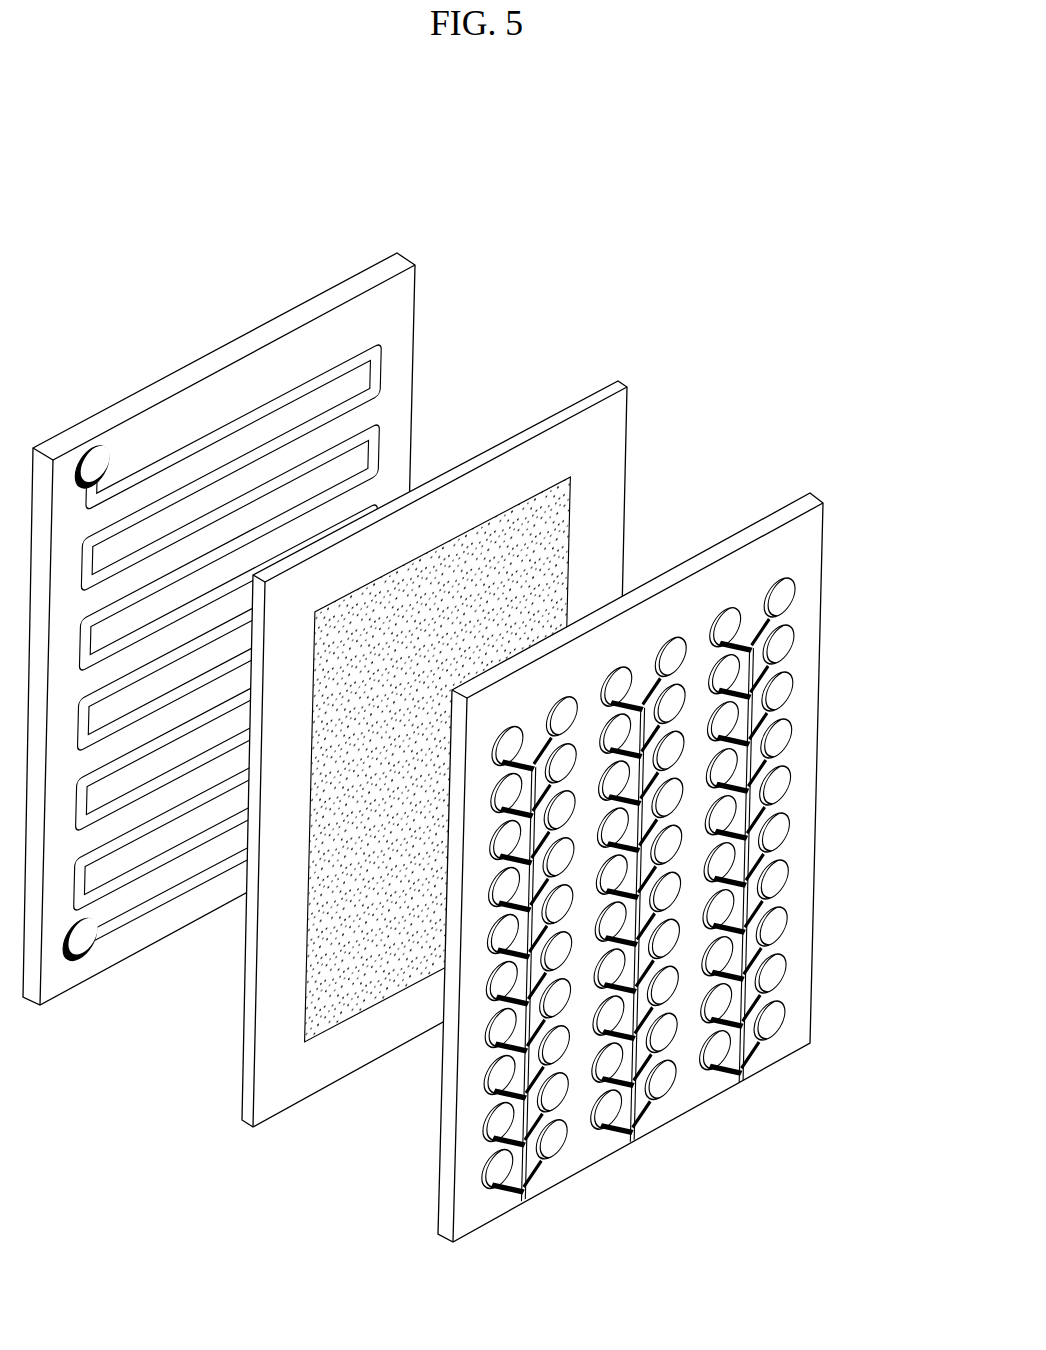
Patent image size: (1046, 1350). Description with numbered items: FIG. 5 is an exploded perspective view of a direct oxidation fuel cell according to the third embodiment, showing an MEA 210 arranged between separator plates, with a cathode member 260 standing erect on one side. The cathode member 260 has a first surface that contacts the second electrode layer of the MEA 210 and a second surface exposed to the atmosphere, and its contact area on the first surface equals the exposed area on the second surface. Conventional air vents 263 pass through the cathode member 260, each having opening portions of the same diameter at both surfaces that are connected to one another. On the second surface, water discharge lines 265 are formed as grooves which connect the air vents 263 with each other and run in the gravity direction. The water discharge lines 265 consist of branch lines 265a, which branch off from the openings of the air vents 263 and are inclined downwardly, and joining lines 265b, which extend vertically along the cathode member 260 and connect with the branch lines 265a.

The MEA 210 is at (216, 1085).
The cathode member 260 is at (618, 868).
The air vents 263 is at (814, 593).
The water discharge lines 265 is at (698, 916).
The branch lines 265a is at (621, 918).
The joining lines 265b is at (758, 677).